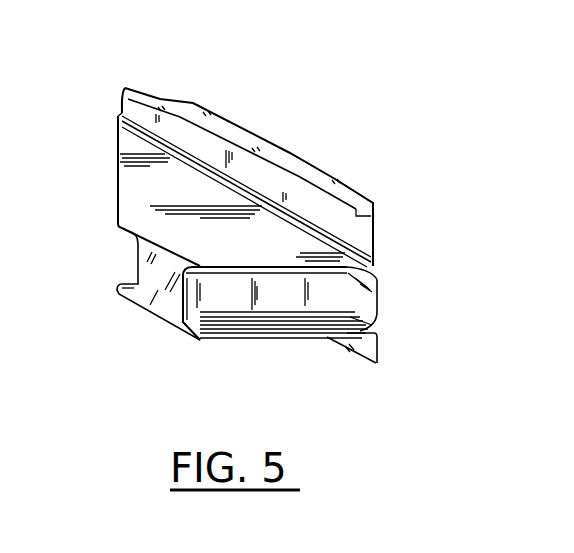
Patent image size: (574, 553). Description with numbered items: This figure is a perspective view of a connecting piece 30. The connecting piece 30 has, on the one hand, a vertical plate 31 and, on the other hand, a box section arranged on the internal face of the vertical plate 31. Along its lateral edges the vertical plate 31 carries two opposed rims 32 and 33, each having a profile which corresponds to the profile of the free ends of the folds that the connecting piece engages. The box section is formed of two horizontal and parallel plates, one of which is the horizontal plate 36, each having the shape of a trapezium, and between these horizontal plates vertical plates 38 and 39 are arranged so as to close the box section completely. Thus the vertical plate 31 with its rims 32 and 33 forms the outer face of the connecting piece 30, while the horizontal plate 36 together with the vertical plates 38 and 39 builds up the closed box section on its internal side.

The connecting piece 30 is at (291, 150).
The vertical plate 31 is at (375, 207).
The rim 32 is at (121, 100).
The rim 33 is at (380, 355).
The horizontal plate 36 is at (126, 191).
The vertical plate 38 is at (277, 292).
The vertical plate 39 is at (158, 297).